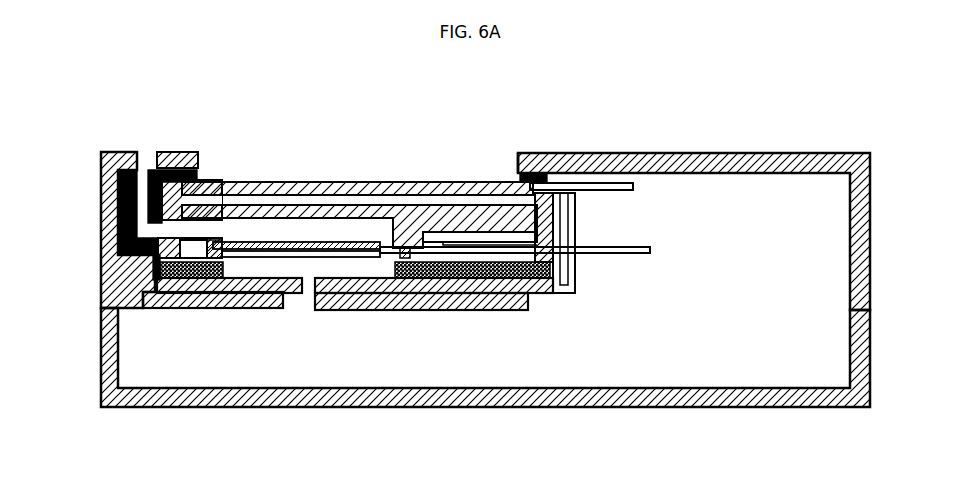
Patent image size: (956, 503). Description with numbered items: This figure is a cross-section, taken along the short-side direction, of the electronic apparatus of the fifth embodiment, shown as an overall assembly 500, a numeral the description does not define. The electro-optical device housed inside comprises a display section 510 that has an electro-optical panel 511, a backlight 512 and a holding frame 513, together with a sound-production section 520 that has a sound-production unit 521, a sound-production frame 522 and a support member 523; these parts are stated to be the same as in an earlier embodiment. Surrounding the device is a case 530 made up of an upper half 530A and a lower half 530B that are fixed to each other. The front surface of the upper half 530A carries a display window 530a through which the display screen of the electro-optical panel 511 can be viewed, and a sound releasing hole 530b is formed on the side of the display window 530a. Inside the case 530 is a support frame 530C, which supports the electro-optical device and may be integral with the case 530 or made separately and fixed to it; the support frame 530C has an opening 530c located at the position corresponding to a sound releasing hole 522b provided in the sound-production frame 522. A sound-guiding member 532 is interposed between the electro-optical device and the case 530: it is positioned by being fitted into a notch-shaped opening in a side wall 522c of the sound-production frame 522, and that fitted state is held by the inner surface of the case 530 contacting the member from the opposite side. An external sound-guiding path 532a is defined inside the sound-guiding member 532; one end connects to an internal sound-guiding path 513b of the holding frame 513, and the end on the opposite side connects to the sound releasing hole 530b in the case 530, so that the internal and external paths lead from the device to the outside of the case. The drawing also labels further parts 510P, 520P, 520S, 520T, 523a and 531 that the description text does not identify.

The display device 500 is at (692, 55).
The display section 510 is at (457, 177).
The panel flexible printed circuit 510P is at (605, 187).
The electro-optical panel 511 is at (292, 183).
The backlight 512 is at (325, 215).
The holding frame 513 is at (274, 200).
The internal sound-guiding path 513b is at (193, 222).
The sound-production section 520 is at (458, 300).
The backlight flexible printed circuit 520P is at (637, 250).
The light emitting surface 520S is at (360, 233).
The backlight terminal portion 520T is at (233, 268).
The sound-production unit 521 is at (340, 252).
The sound-production frame 522 is at (103, 312).
The sound releasing hole 522b is at (310, 282).
The side wall 522c is at (157, 266).
The support member 523 is at (540, 284).
The cushion member 523a is at (345, 258).
The case 530 is at (236, 408).
The upper half 530A is at (785, 153).
The lower half 530B is at (720, 408).
The display window 530a is at (530, 173).
The sound releasing hole 530b is at (133, 152).
The opening 530c is at (287, 308).
The support frame 530C is at (556, 293).
The adhesive member 531 is at (548, 180).
The sound-guiding member 532 is at (102, 186).
The external sound-guiding path 532a is at (148, 190).